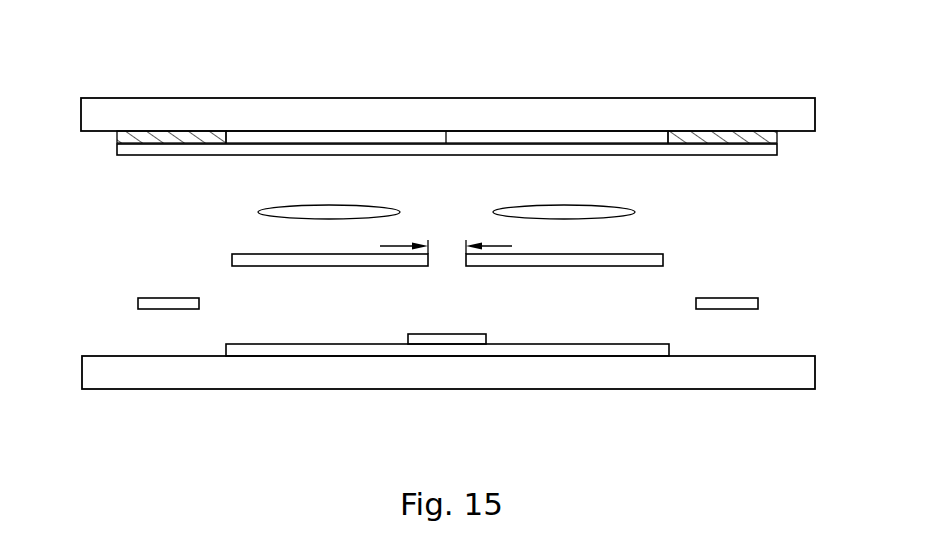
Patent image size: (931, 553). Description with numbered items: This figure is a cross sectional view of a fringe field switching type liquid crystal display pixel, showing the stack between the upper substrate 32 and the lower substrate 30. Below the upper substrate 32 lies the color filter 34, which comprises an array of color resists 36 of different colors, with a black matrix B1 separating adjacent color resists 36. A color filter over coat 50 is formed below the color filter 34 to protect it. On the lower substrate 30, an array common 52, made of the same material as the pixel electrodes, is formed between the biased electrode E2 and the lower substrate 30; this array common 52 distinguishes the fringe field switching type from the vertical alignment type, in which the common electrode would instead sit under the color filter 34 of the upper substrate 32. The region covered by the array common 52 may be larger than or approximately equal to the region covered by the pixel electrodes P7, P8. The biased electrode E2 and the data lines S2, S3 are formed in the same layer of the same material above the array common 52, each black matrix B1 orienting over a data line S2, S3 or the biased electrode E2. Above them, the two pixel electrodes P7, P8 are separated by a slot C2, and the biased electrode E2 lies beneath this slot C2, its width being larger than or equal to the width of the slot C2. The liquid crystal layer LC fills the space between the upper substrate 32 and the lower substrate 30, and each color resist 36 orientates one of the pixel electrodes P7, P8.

The upper substrate 32 is at (126, 98).
The color filter 34 is at (117, 137).
The black matrix B1 is at (187, 137).
The color resists 36 is at (312, 137).
The color filter over coat 50 is at (117, 146).
The liquid crystal layer LC is at (446, 200).
The pixel electrode P7 is at (232, 258).
The pixel electrode P8 is at (663, 258).
The slot C2 is at (446, 237).
The data line S2 is at (138, 304).
The data line S3 is at (758, 302).
The biased electrode E2 is at (408, 336).
The array common 52 is at (669, 351).
The lower substrate 30 is at (133, 373).